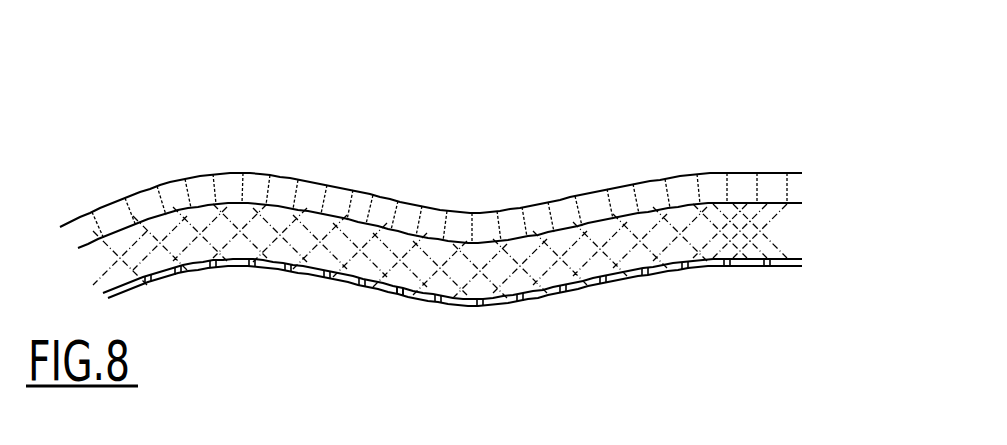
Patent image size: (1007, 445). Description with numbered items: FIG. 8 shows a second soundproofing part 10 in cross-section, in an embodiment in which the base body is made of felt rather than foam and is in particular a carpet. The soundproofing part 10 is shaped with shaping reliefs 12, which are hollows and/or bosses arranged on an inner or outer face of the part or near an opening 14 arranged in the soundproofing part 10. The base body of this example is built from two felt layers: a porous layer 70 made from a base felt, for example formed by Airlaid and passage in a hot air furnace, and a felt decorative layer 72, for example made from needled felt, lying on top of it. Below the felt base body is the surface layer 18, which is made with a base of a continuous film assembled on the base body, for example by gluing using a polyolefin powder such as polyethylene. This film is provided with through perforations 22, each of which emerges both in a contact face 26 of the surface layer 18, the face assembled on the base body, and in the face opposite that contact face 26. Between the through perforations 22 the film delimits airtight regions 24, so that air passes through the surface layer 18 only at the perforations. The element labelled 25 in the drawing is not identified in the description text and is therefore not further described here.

The soundproofing part 10 is at (118, 138).
The shaping reliefs 12 is at (246, 298).
The opening 14 is at (808, 174).
The surface layer 18 is at (818, 300).
The through perforations 22 is at (608, 288).
The airtight regions 24 is at (590, 297).
The reinforcing element 25 is at (347, 287).
The contact face 26 is at (393, 279).
The porous layer 70 is at (745, 237).
The felt decorative layer 72 is at (712, 185).